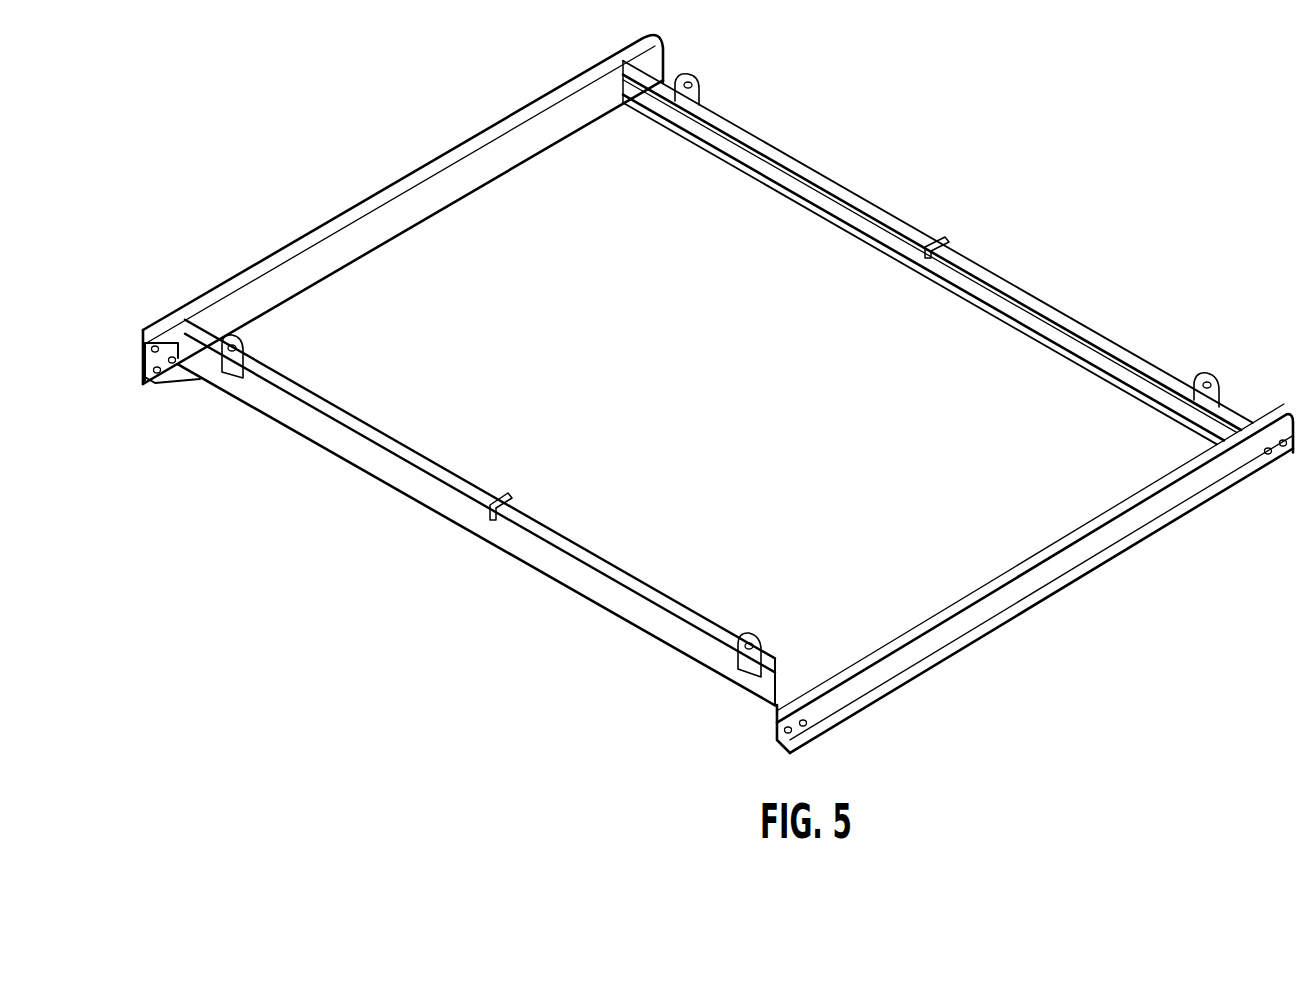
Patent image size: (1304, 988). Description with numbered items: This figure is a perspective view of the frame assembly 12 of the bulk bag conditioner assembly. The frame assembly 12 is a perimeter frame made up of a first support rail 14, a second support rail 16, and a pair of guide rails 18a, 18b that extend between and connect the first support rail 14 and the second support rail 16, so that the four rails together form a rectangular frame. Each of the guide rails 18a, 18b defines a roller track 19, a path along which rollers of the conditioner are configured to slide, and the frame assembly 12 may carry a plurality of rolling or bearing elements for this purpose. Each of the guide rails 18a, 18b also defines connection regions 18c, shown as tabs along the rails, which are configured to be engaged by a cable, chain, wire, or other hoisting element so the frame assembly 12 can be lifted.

The frame assembly 12 is at (1107, 338).
The first support rail 14 is at (441, 172).
The second support rail 16 is at (1085, 555).
The guide rail 18a is at (1018, 289).
The guide rail 18b is at (413, 484).
The connection region 18c is at (697, 86).
The roller track 19 is at (946, 276).